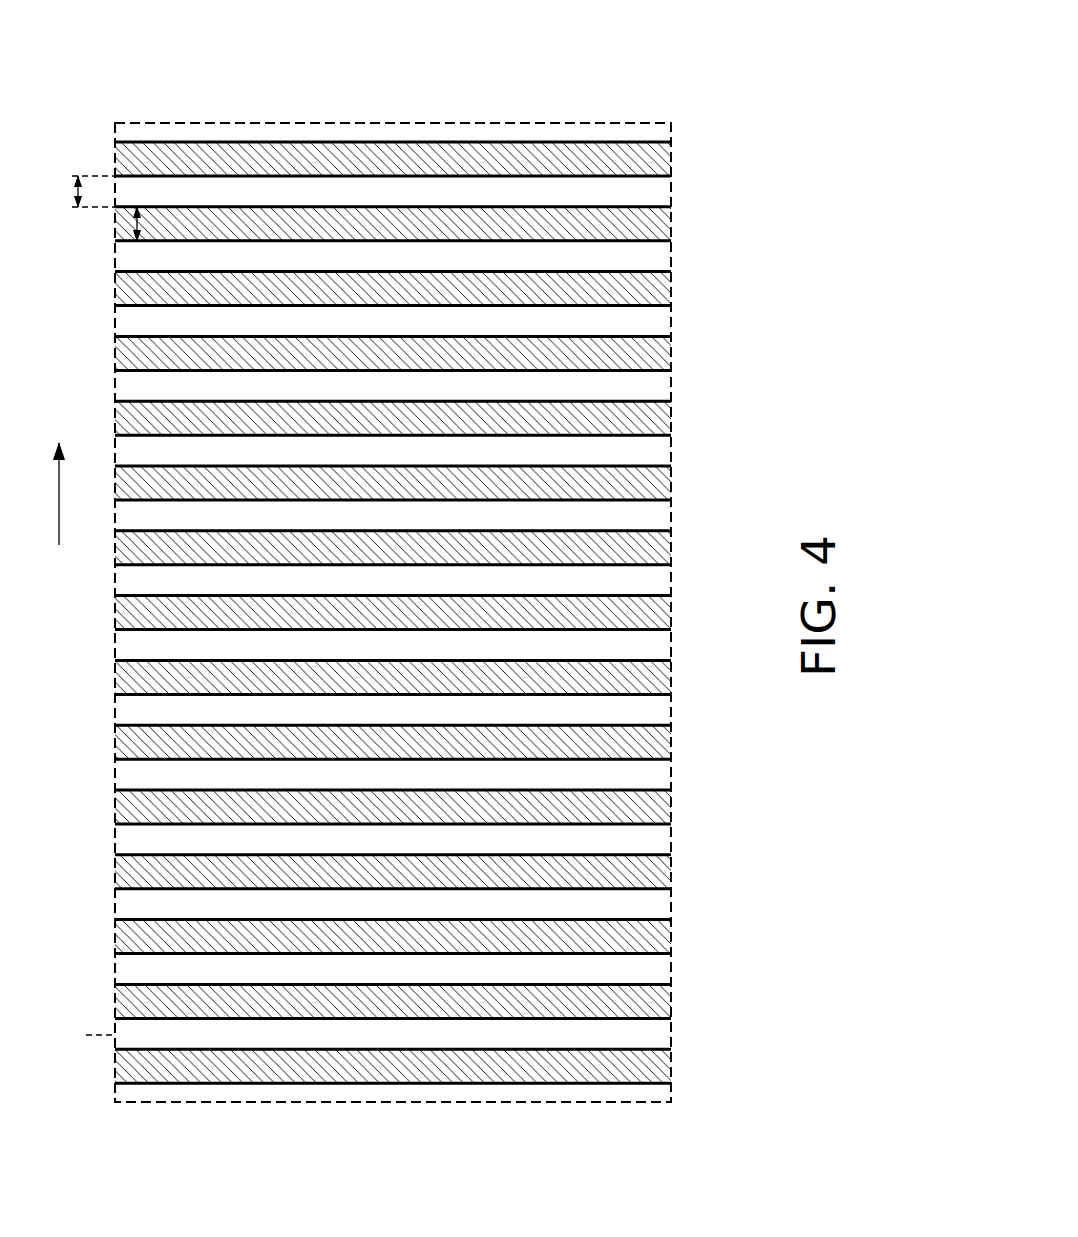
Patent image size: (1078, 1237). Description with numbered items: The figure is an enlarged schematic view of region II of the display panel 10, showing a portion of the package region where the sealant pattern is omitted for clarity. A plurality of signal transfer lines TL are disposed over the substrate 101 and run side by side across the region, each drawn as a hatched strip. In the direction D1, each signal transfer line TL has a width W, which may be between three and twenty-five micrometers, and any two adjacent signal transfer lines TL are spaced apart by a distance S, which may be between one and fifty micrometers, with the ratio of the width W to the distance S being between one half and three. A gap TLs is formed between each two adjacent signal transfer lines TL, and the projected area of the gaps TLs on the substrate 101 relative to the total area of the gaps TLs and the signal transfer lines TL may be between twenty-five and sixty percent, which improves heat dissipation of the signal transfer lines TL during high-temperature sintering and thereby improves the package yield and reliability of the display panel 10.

The display panel 10 is at (384, 561).
The substrate 101 is at (171, 132).
The signal transfer lines TL is at (279, 222).
The gap TLs is at (453, 193).
The distance S is at (73, 191).
The width W is at (134, 223).
The direction D1 is at (37, 494).
The region II is at (61, 1031).